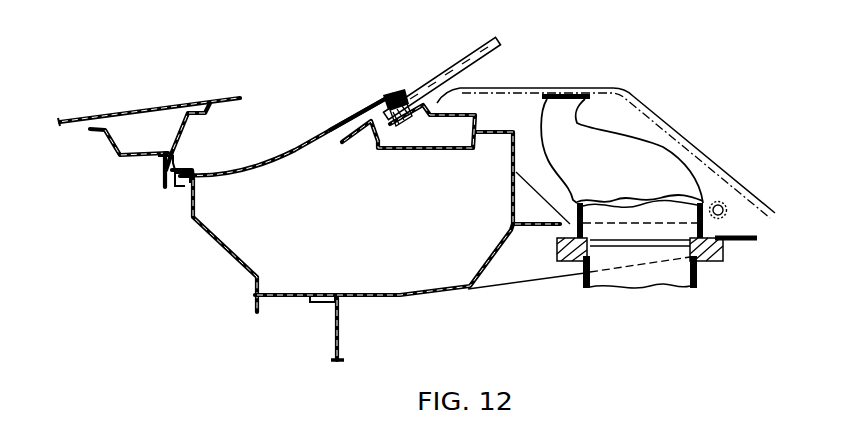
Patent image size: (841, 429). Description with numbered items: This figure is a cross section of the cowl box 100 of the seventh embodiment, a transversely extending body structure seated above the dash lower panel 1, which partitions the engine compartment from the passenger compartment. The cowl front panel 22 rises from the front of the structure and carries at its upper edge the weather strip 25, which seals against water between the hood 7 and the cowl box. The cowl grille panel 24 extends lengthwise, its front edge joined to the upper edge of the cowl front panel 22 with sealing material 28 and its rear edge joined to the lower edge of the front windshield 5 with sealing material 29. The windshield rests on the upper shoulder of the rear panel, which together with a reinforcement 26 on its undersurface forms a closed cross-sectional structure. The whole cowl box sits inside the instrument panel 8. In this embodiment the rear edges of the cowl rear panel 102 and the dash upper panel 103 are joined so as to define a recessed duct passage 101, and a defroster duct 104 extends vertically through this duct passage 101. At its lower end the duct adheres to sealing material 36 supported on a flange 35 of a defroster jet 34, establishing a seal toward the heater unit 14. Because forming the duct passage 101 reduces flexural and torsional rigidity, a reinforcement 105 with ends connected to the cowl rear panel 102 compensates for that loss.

The dash lower panel 1 is at (335, 339).
The front windshield 5 is at (458, 61).
The hood 7 is at (188, 98).
The instrument panel 8 is at (613, 87).
The heater unit 14 is at (697, 272).
The cowl front panel 22 is at (230, 259).
The cowl grille panel 24 is at (343, 118).
The weather strip 25 is at (157, 169).
The reinforcement 26 is at (412, 150).
The sealing material 28 is at (183, 172).
The sealing material 29 is at (396, 93).
The defroster jet 34 is at (662, 278).
The flange 35 is at (722, 260).
The sealing material 36 is at (590, 246).
The cowl box 100 is at (315, 167).
The duct passage 101 is at (551, 265).
The cowl rear panel 102 is at (512, 167).
The dash upper panel 103 is at (397, 300).
The defroster duct 104 is at (668, 148).
The reinforcement 105 is at (736, 200).